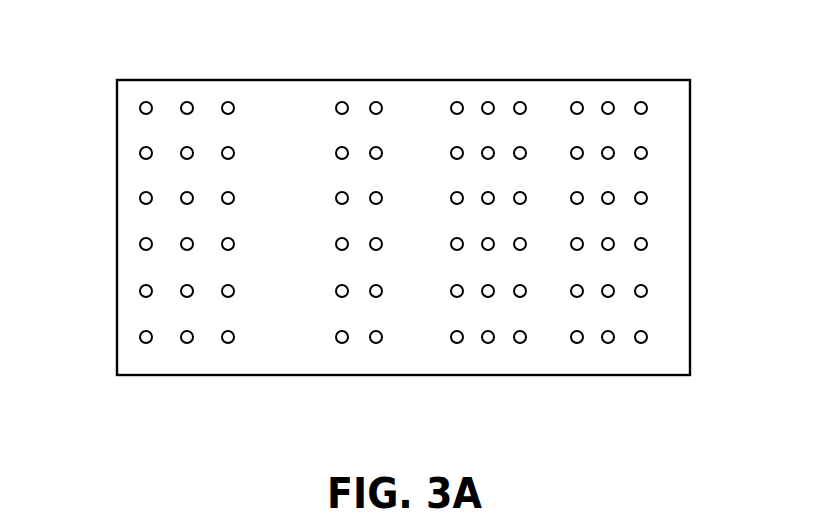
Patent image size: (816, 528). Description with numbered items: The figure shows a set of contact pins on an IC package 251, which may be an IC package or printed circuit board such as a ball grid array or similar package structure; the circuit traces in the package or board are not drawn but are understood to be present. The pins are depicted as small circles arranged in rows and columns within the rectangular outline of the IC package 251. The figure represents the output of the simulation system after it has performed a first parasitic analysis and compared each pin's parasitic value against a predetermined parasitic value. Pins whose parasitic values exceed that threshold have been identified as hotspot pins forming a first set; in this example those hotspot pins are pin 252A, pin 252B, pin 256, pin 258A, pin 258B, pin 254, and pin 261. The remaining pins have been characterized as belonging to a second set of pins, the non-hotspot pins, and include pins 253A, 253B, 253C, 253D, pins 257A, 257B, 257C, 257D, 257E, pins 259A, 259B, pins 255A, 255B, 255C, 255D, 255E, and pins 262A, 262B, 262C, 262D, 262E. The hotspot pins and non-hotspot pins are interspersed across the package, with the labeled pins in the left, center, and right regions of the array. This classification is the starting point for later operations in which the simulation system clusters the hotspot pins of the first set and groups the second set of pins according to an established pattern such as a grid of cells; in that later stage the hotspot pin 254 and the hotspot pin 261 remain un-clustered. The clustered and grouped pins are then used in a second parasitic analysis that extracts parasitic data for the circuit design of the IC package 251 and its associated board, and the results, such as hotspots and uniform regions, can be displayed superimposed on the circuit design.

The IC package 251 is at (424, 56).
The hotspot pin 252A is at (140, 108).
The hotspot pin 252B is at (187, 102).
The non-hotspot pin 253A is at (233, 103).
The non-hotspot pin 253B is at (235, 152).
The non-hotspot pin 253C is at (182, 158).
The non-hotspot pin 253D is at (140, 153).
The hotspot pin 254 is at (580, 102).
The non-hotspot pin 255A is at (648, 109).
The non-hotspot pin 255B is at (613, 112).
The non-hotspot pin 255C is at (583, 150).
The non-hotspot pin 255D is at (646, 157).
The non-hotspot pin 255E is at (612, 158).
The hotspot pin 256 is at (224, 286).
The non-hotspot pin 257A is at (142, 296).
The non-hotspot pin 257B is at (183, 297).
The non-hotspot pin 257C is at (143, 348).
The non-hotspot pin 257D is at (185, 348).
The non-hotspot pin 257E is at (227, 347).
The hotspot pin 258A is at (337, 293).
The hotspot pin 258B is at (337, 343).
The non-hotspot pin 259A is at (378, 343).
The non-hotspot pin 259B is at (382, 295).
The hotspot pin 261 is at (647, 287).
The non-hotspot pin 262A is at (613, 297).
The non-hotspot pin 262B is at (573, 297).
The non-hotspot pin 262C is at (577, 345).
The non-hotspot pin 262D is at (607, 345).
The non-hotspot pin 262E is at (643, 345).